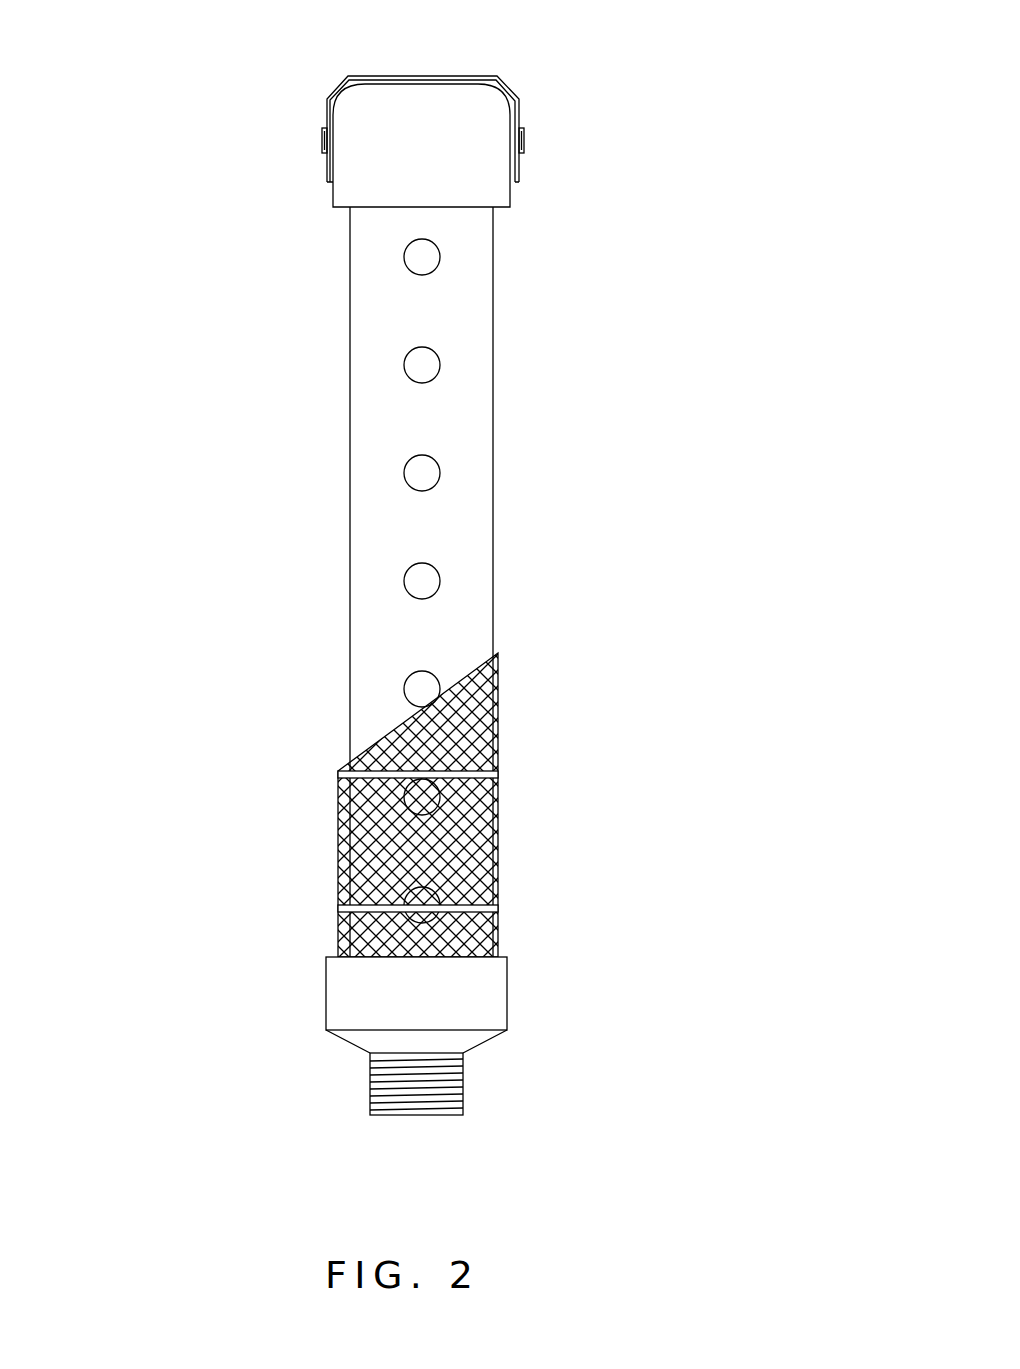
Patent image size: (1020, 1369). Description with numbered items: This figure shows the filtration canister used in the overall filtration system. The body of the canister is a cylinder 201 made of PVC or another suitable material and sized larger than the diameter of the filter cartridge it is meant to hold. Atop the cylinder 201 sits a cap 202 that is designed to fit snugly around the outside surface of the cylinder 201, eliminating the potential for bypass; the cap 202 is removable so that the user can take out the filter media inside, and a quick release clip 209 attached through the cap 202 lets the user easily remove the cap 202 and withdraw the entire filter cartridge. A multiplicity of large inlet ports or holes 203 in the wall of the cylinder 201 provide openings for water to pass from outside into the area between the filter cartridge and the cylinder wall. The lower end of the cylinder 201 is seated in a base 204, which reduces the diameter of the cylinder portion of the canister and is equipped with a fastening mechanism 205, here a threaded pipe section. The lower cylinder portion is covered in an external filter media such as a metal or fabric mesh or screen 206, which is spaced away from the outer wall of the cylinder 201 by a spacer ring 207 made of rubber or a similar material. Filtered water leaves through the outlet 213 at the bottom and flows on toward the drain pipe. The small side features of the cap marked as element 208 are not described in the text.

The cylinder 201 is at (377, 418).
The cap 202 is at (380, 122).
The inlet ports or holes 203 is at (440, 268).
The base 204 is at (500, 1013).
The fastening mechanism 205 is at (370, 1092).
The mesh or screen 206 is at (337, 822).
The spacer ring 207 is at (482, 767).
The tab 208 is at (525, 143).
The quick release clip 209 is at (487, 72).
The outlet 213 is at (422, 1122).